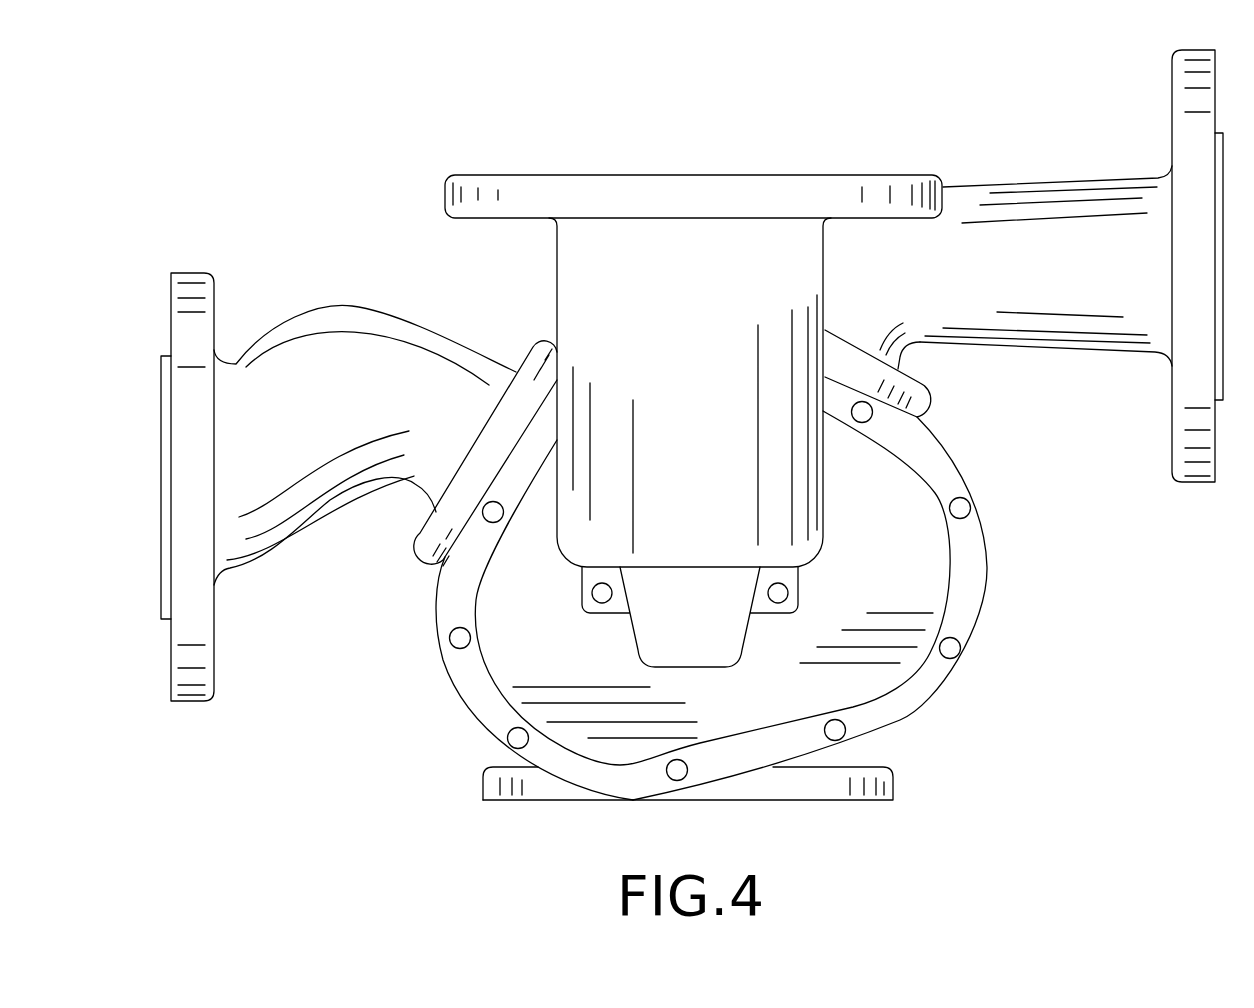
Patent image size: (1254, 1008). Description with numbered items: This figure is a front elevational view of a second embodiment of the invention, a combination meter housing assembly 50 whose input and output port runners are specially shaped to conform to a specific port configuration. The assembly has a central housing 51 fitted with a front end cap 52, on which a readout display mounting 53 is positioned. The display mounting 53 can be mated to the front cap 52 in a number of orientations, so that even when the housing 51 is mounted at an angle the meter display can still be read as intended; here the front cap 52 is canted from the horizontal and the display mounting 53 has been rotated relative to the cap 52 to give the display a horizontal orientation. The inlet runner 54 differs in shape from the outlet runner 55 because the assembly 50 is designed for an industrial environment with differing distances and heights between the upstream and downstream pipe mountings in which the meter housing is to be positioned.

The combination meter housing assembly 50 is at (348, 745).
The central housing 51 is at (860, 756).
The front end cap 52 is at (921, 556).
The readout display mounting 53 is at (838, 161).
The inlet runner 54 is at (342, 293).
The outlet runner 55 is at (1060, 169).